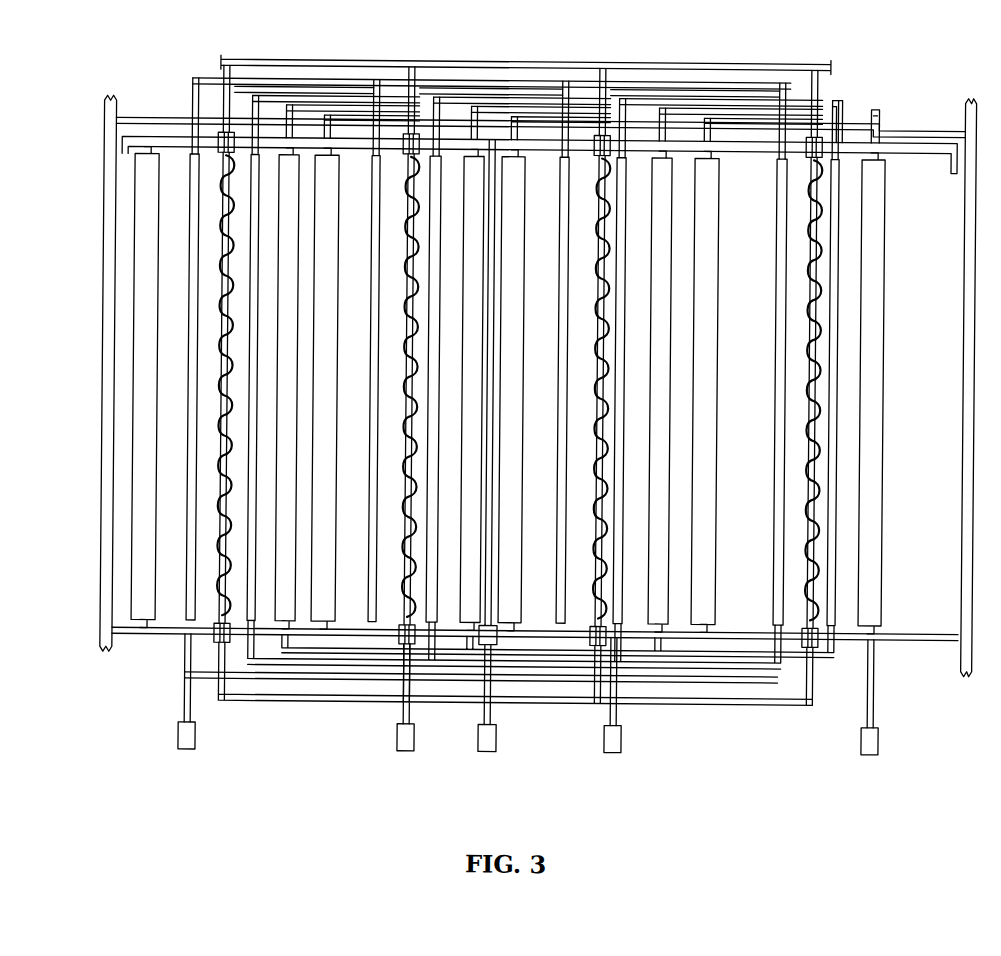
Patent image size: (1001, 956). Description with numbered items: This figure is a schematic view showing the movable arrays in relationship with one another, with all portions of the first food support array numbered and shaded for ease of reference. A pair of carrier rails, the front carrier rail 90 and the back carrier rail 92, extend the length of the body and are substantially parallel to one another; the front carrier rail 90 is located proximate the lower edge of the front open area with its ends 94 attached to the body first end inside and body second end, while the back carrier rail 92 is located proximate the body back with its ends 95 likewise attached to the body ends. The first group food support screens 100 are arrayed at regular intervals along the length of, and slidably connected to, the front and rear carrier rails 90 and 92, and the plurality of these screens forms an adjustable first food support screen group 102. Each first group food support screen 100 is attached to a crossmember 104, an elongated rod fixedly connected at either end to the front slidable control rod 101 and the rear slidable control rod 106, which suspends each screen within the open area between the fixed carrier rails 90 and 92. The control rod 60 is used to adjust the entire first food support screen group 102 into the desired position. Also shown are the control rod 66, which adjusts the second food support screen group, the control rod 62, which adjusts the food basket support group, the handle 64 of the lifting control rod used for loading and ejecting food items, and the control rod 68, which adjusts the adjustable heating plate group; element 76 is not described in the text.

The control rod 60 is at (190, 752).
The control rod 62 is at (409, 752).
The handle 64 is at (490, 752).
The control rod 66 is at (616, 752).
The control rod 68 is at (873, 752).
The left side header frame 76 is at (113, 504).
The front carrier rail 90 is at (904, 640).
The back carrier rail 92 is at (896, 128).
The ends of front carrier rail 94 is at (110, 652).
The ends of back carrier rail 95 is at (111, 104).
The first group food support screen 100 is at (775, 470).
The front slidable control rod 101 is at (284, 683).
The first food support screen group 102 is at (190, 162).
The crossmember 104 is at (191, 105).
The rear slidable control rod 106 is at (288, 68).